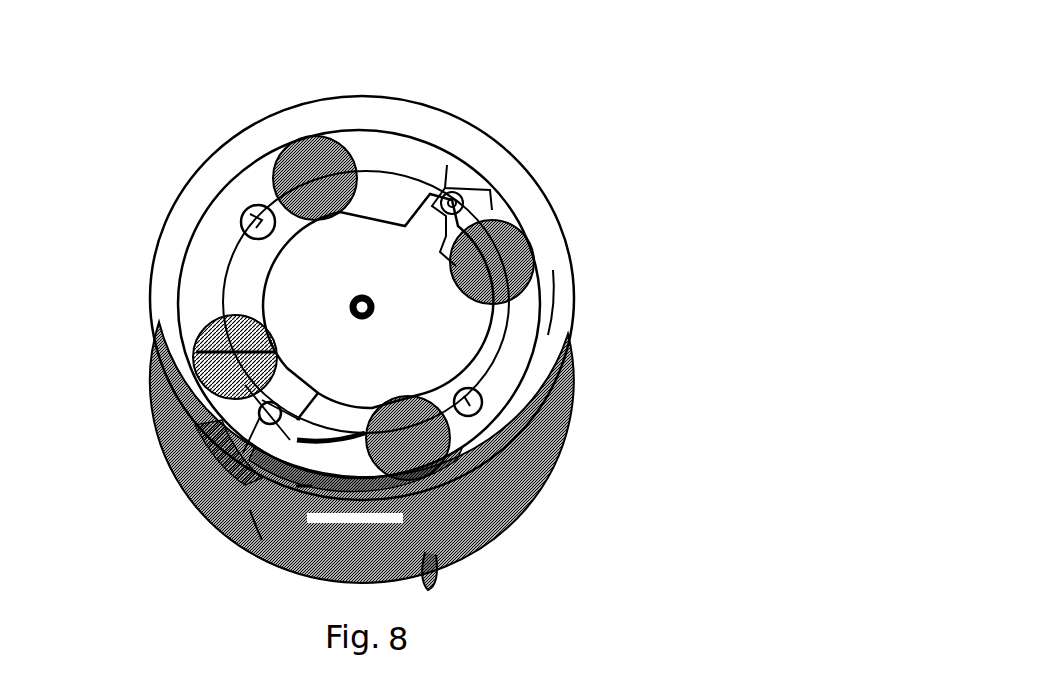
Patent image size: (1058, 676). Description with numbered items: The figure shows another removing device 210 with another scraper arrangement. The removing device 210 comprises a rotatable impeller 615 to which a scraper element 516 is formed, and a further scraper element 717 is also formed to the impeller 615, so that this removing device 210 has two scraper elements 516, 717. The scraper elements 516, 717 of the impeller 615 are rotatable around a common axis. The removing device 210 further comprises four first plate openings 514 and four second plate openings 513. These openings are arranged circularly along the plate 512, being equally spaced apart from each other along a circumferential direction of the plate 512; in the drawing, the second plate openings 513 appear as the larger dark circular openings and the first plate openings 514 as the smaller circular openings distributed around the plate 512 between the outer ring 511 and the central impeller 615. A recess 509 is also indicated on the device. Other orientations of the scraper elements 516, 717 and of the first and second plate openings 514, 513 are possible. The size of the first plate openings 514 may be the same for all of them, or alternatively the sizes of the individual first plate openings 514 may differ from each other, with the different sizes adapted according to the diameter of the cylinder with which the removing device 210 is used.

The removing device 210 is at (636, 252).
The recess 509 is at (445, 180).
The outer ring 511 is at (566, 412).
The plate 512 is at (540, 333).
The second plate opening 513 is at (290, 136).
The first plate opening 514 is at (250, 210).
The scraper element 516 is at (262, 540).
The impeller 615 is at (360, 250).
The further scraper element 717 is at (470, 182).